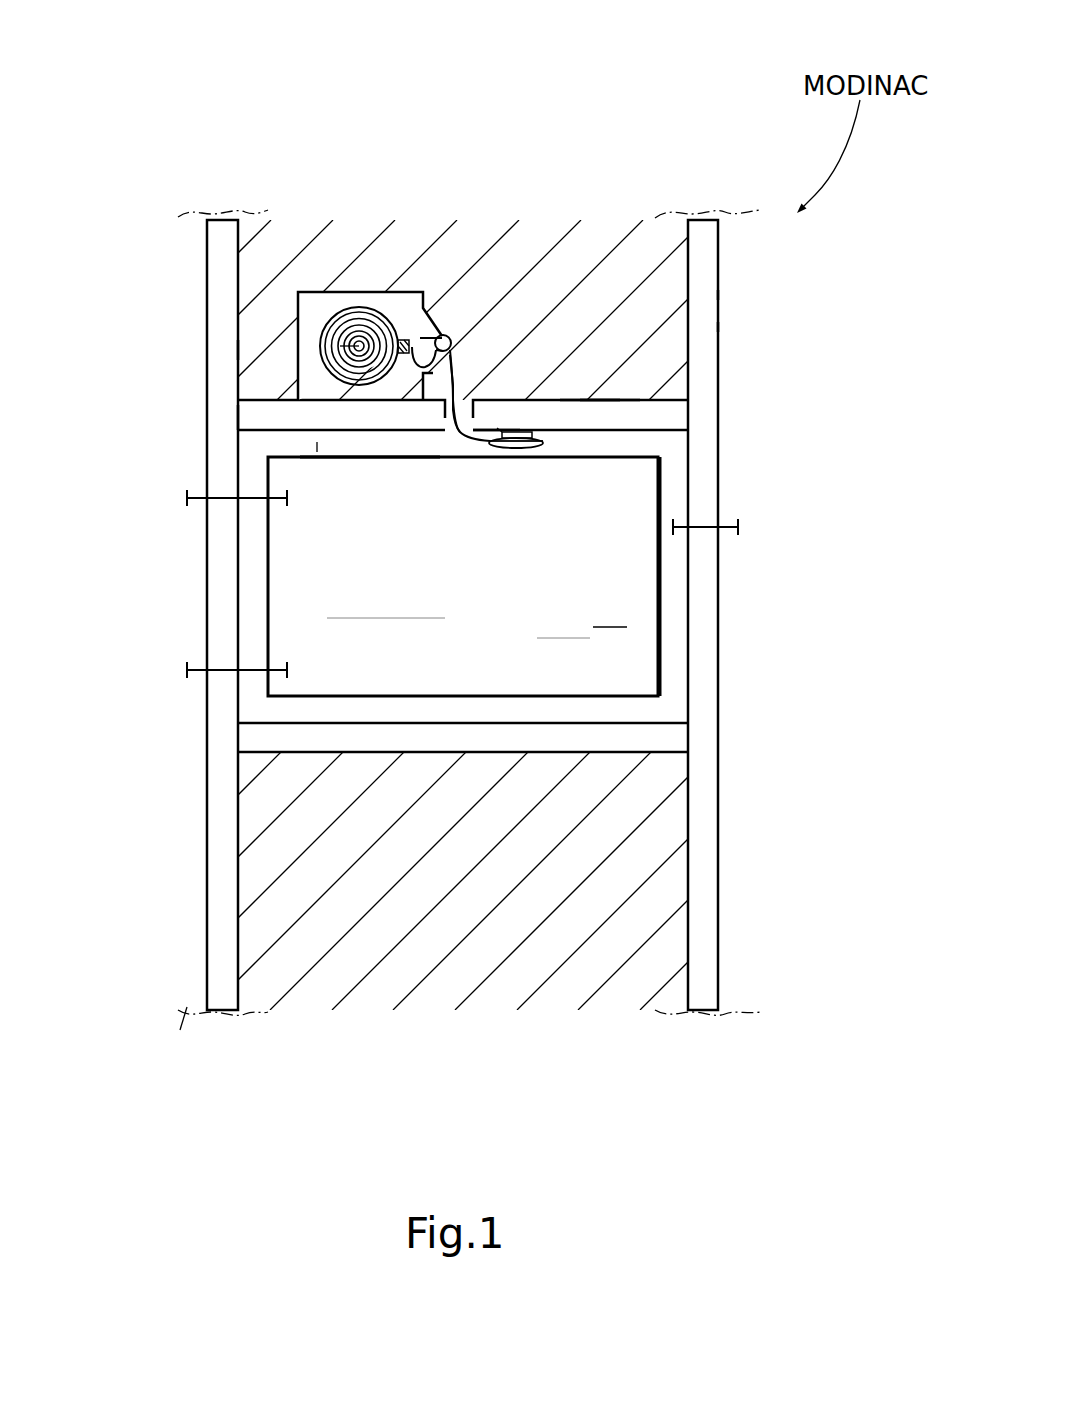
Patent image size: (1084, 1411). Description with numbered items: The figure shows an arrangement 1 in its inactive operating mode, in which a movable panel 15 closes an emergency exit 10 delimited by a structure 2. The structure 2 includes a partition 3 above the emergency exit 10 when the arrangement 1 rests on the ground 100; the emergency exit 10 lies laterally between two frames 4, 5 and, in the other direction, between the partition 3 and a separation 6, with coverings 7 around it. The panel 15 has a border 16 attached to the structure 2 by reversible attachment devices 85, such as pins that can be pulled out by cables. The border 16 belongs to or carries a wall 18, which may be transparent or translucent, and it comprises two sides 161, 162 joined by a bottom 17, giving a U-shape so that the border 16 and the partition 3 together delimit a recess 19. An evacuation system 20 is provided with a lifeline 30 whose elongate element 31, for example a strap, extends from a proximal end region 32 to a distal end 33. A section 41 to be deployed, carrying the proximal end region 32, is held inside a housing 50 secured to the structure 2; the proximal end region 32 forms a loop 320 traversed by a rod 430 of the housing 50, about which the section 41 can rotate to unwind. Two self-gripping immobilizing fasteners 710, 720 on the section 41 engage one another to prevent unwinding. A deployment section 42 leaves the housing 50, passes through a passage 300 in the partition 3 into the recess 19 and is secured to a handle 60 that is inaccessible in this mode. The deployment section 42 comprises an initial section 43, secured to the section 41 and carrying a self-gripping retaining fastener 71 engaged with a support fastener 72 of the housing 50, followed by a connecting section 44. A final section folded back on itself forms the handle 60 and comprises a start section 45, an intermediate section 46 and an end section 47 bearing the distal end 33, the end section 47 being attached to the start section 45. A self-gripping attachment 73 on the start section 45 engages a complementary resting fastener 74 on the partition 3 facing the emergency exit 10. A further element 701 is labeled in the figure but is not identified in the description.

The arrangement 1 is at (760, 295).
The structure 2 is at (760, 326).
The partition 3 is at (627, 413).
The frame 4 is at (720, 572).
The frame 5 is at (207, 573).
The separation 6 is at (553, 737).
The coverings 7 is at (640, 240).
The emergency exit 10 is at (525, 618).
The movable panel 15 is at (668, 620).
The border 16 is at (673, 475).
The bottom 17 is at (372, 458).
The wall 18 is at (610, 614).
The recess 19 is at (458, 445).
The evacuation system 20 is at (260, 347).
The lifeline 30 is at (355, 335).
The elongate element 31 is at (359, 346).
The proximal end region 32 is at (372, 333).
The distal end 33 is at (547, 433).
The section to be deployed 41 is at (410, 292).
The deployment section 42 is at (471, 420).
The initial section 43 is at (458, 375).
The connecting section 44 is at (462, 400).
The start section 45 is at (517, 430).
The intermediate section 46 is at (527, 448).
The end section 47 is at (520, 447).
The housing 50 is at (308, 292).
The handle 60 is at (595, 410).
The retaining fastener 71 is at (445, 333).
The support fastener 72 is at (439, 350).
The self-gripping attachment 73 is at (547, 448).
The resting fastener 74 is at (497, 427).
The reversible attachment devices 85 is at (252, 500).
The ground 100 is at (187, 1007).
The side 161 is at (317, 442).
The side 162 is at (238, 412).
The passage 300 is at (497, 428).
The loop 320 is at (350, 335).
The rod 430 is at (330, 337).
The plate inner region 701 is at (572, 412).
The immobilizing fastener 710 is at (406, 356).
The immobilizing fastener 720 is at (408, 362).